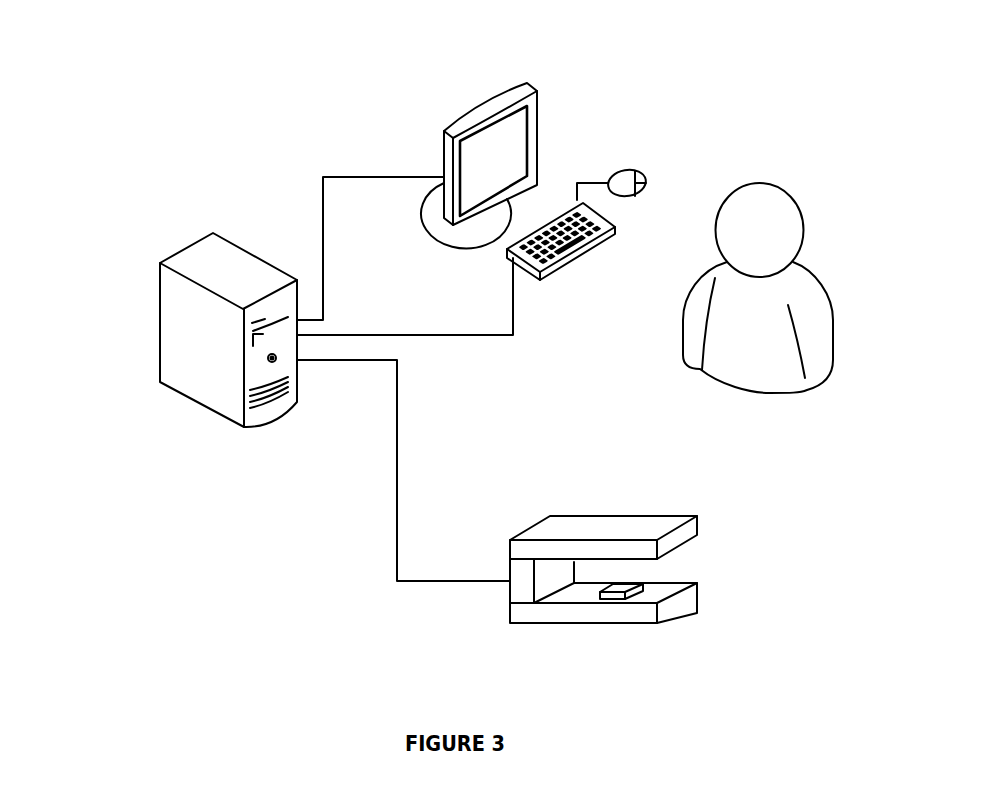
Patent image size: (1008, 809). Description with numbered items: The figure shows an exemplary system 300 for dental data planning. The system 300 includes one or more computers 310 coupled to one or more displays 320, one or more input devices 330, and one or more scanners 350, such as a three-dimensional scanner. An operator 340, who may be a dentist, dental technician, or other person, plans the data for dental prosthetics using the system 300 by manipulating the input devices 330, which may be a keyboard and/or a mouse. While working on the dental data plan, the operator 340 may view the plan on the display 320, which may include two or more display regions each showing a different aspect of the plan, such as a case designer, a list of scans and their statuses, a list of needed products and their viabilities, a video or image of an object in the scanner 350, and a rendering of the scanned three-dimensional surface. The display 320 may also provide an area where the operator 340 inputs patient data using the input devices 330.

The system 300 is at (162, 200).
The computer 310 is at (160, 338).
The display 320 is at (498, 92).
The input device 330 is at (575, 273).
The operator 340 is at (763, 183).
The scanner 350 is at (637, 515).